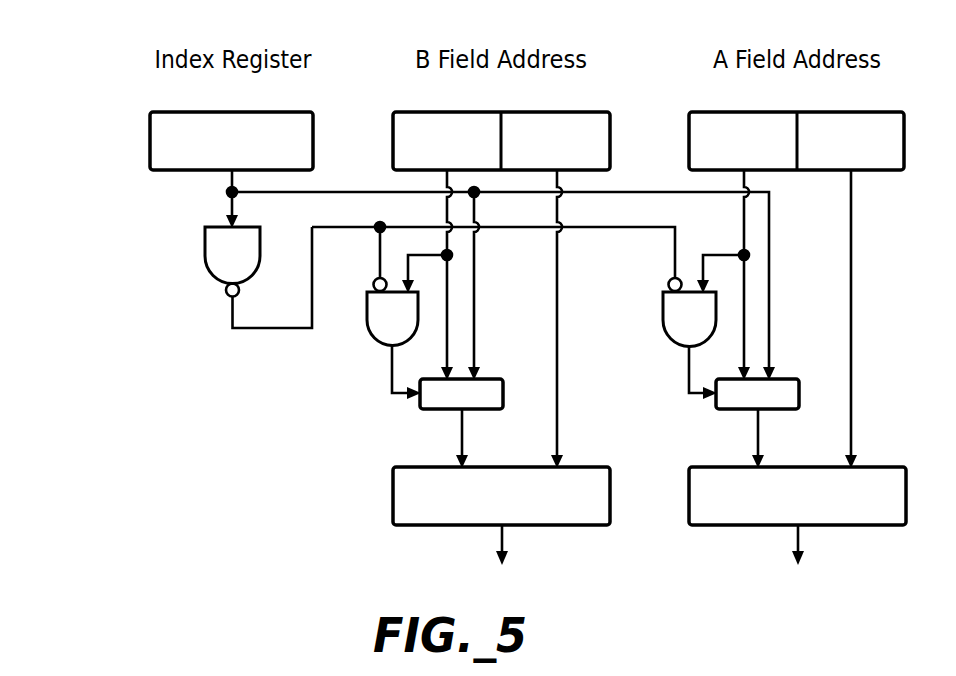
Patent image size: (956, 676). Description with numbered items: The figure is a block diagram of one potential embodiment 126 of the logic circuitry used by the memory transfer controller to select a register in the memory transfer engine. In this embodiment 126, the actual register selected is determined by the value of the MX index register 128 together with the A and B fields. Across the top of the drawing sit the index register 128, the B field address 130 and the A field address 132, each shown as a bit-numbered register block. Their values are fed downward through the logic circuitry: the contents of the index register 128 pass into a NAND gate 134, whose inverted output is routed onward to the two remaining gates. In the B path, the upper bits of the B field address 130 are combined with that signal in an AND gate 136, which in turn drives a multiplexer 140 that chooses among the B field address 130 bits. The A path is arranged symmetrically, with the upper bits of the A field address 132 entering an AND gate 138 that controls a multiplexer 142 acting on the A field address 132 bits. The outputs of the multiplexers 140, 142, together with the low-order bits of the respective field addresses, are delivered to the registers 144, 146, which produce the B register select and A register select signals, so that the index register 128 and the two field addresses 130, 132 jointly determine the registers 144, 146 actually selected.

The potential embodiment of logic circuitry for selecting registers 126 is at (66, 28).
The index register 128 is at (190, 128).
The B field address 130 is at (465, 118).
The A field address 132 is at (761, 118).
The NAND gate 134 is at (216, 272).
The AND gate 136 is at (350, 325).
The AND gate 138 is at (647, 325).
The multiplexer 140 is at (426, 409).
The multiplexer 142 is at (718, 409).
The register 144 is at (460, 516).
The register 146 is at (756, 516).